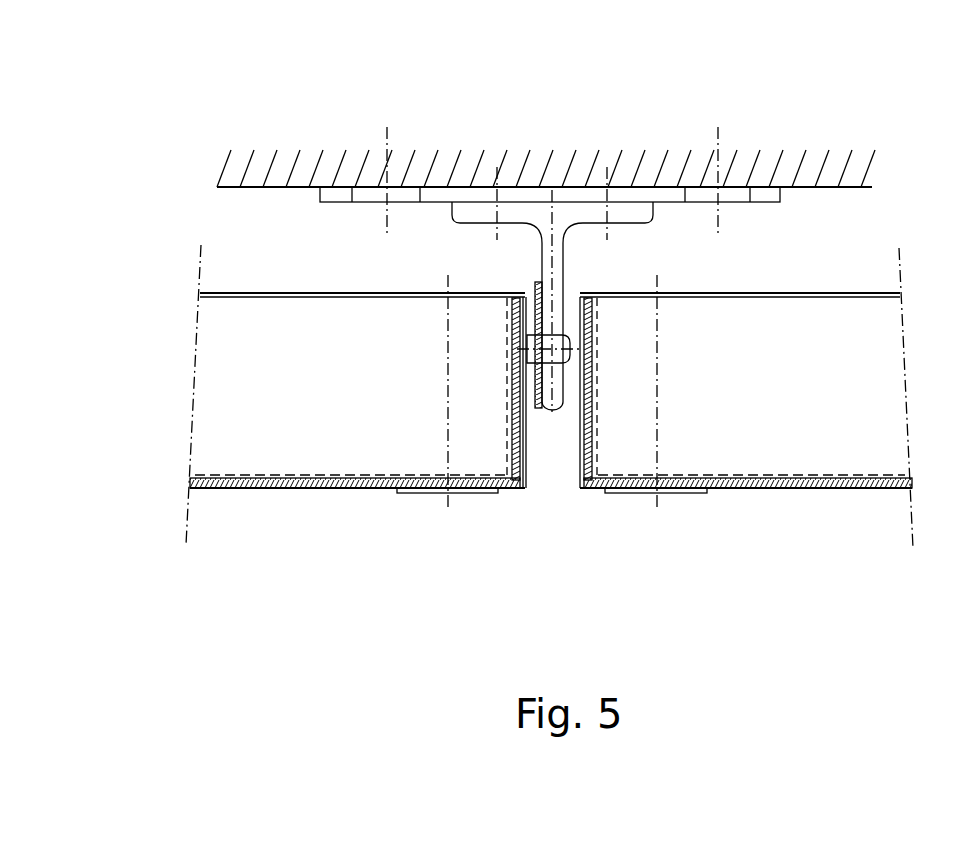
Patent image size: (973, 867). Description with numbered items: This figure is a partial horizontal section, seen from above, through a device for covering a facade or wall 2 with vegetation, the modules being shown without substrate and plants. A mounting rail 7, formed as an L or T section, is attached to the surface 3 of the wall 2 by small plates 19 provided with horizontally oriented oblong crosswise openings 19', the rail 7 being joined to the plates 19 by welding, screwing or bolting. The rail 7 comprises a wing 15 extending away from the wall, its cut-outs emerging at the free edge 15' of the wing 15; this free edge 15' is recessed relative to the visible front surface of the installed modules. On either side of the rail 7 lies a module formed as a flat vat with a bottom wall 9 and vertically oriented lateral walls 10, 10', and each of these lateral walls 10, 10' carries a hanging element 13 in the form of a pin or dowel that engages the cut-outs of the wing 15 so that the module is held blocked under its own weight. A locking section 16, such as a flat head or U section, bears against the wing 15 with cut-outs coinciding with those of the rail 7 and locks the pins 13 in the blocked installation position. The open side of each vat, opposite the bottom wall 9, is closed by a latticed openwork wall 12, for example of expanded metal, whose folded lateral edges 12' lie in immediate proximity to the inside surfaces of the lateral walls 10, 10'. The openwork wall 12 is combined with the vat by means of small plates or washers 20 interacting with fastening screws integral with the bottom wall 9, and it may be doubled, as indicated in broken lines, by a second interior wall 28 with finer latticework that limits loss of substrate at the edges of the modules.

The facade or wall 2 is at (867, 172).
The surface of the facade or wall 3 is at (872, 190).
The mounting rail 7 is at (635, 208).
The bottom wall 9 is at (336, 293).
The lateral wall 10 is at (563, 489).
The lateral wall 10' is at (551, 531).
The openwork wall 12 is at (551, 529).
The folded lateral edge 12' is at (522, 407).
The hanging element 13 is at (578, 312).
The wing 15 is at (552, 301).
The free edge of the wing 15' is at (556, 449).
The locking section 16 is at (535, 295).
The small plate 19 is at (594, 211).
The oblong crosswise opening 19' is at (607, 151).
The small plate or washer 20 is at (423, 493).
The second interior wall 28 is at (479, 486).